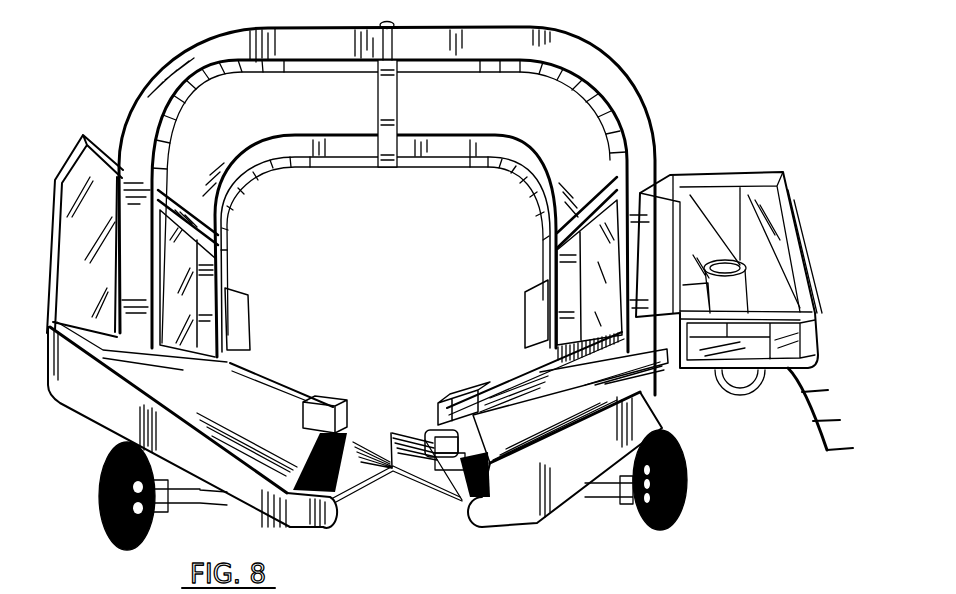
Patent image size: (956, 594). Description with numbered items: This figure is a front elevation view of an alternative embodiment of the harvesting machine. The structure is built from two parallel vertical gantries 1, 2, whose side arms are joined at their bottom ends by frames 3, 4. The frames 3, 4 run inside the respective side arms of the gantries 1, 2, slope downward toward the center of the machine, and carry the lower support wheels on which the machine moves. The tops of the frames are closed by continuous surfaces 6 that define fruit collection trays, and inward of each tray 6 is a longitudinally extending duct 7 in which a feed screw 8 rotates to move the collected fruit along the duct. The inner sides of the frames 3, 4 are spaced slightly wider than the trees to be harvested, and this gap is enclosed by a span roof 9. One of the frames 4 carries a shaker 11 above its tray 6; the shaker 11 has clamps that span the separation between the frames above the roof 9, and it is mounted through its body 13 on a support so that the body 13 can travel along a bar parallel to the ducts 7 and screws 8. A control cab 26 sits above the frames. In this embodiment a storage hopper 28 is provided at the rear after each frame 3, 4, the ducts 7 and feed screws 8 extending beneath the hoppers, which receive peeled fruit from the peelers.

The vertical gantry 1 is at (627, 100).
The vertical gantry 2 is at (487, 147).
The frame 3 is at (88, 395).
The frame 4 is at (563, 472).
The continuous surface 6 is at (257, 357).
The longitudinally extending duct 7 is at (468, 517).
The feed screw 8 is at (337, 400).
The span roof 9 is at (390, 430).
The shaker 11 is at (442, 430).
The body 13 is at (98, 147).
The control cab 26 is at (738, 177).
The storage hopper 28 is at (278, 372).